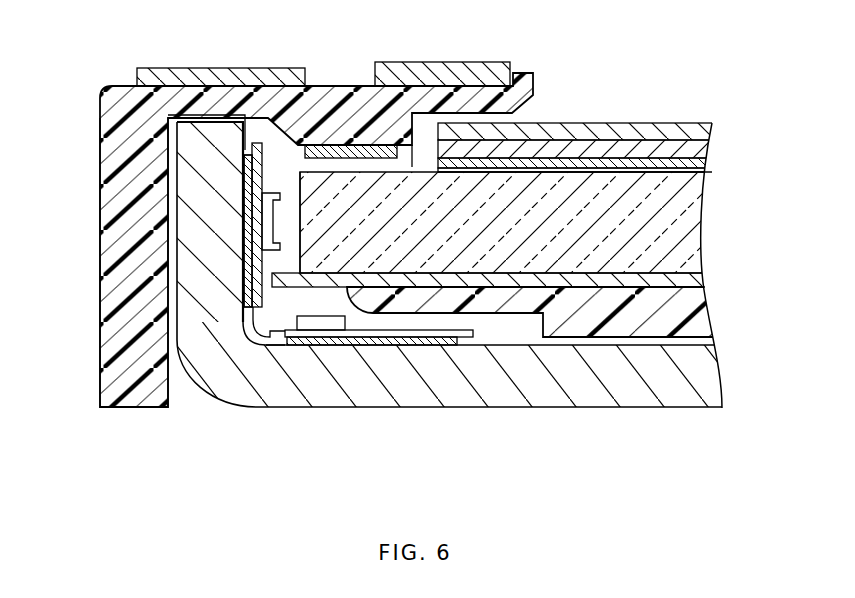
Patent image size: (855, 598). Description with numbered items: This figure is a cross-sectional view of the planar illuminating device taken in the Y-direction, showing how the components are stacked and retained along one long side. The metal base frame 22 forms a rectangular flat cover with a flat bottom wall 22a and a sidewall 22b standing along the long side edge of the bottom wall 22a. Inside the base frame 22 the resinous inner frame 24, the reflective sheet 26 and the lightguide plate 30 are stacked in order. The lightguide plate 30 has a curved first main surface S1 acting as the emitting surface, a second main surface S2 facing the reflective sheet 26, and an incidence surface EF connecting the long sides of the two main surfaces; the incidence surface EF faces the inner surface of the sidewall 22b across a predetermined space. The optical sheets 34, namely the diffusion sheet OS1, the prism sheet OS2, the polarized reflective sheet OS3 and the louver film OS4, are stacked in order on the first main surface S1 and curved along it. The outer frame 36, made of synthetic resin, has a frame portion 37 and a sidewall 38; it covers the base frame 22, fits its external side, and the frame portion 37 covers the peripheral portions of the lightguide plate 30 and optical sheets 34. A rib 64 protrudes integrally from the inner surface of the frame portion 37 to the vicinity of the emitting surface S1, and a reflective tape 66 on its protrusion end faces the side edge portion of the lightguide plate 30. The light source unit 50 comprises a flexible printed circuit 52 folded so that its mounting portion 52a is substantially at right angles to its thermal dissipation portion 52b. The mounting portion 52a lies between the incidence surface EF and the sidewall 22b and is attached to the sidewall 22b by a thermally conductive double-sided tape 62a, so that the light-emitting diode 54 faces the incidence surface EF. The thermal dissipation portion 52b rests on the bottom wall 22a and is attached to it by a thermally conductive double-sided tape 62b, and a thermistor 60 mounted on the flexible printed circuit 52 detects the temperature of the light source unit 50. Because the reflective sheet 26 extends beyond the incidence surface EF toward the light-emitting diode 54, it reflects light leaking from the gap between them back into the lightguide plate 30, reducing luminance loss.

The base frame 22 is at (387, 298).
The bottom wall 22a is at (571, 388).
The sidewall 22b is at (210, 280).
The inner frame 24 is at (700, 306).
The reflective sheet 26 is at (697, 283).
The lightguide plate 30 is at (687, 220).
The optical sheets 34 is at (638, 151).
The diffusion sheet OS1 is at (617, 181).
The prism sheet OS2 is at (709, 159).
The polarized reflective sheet OS3 is at (708, 146).
The louver film OS4 is at (709, 127).
The outer frame 36 is at (97, 86).
The frame portion 37 is at (318, 107).
The sidewall 38 is at (123, 328).
The light source unit 50 is at (254, 307).
The flexible printed circuit 52 is at (320, 307).
The mounting portion 52a is at (250, 340).
The thermal dissipation portion 52b is at (349, 339).
The light-emitting diode 54 is at (264, 230).
The thermistor 60 is at (313, 325).
The double-sided tape 62a is at (250, 188).
The double-sided tape 62b is at (441, 346).
The rib 64 is at (388, 138).
The reflective tape 66 is at (354, 147).
The incidence surface EF is at (298, 180).
The first main surface S1 is at (583, 168).
The second main surface S2 is at (641, 275).